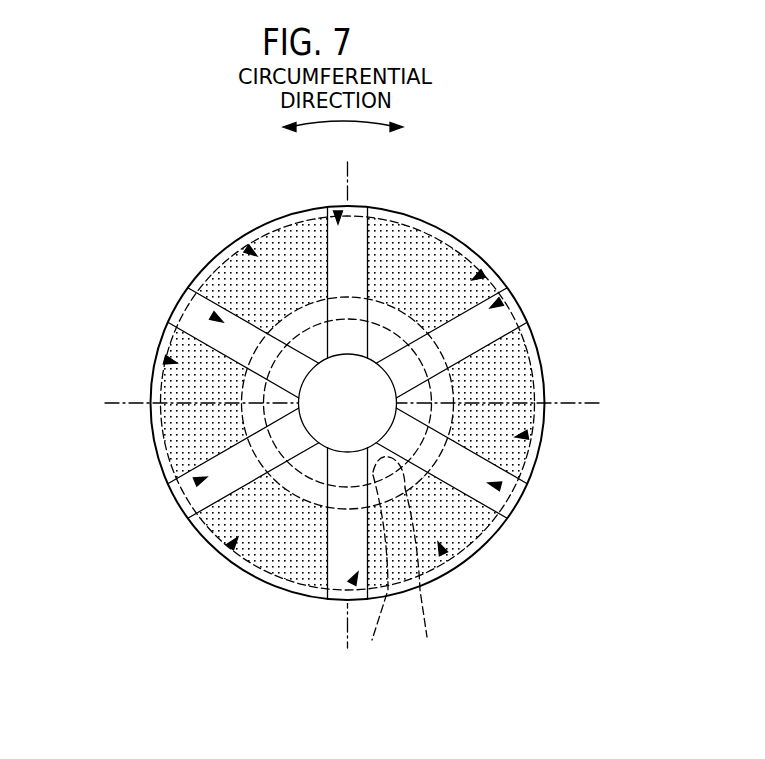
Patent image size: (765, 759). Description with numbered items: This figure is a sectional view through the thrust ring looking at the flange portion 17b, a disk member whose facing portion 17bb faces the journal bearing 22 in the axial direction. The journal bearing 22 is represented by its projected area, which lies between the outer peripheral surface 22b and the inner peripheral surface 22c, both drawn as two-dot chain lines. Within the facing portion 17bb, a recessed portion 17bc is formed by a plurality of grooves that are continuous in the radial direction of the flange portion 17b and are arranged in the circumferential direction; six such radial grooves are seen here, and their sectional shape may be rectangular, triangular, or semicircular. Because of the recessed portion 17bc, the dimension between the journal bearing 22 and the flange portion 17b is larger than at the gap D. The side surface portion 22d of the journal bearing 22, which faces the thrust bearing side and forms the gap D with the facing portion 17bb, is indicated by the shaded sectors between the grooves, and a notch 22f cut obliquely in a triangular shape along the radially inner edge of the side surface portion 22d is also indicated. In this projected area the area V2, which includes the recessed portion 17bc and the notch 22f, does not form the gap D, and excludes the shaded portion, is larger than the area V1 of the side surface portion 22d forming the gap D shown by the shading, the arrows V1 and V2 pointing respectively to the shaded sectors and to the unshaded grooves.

The flange portion 17b is at (266, 222).
The facing portion 17bb is at (183, 388).
The recessed portion 17bc is at (356, 270).
The journal bearing 22 is at (540, 385).
The outer peripheral surface 22b is at (445, 220).
The inner peripheral surface 22c is at (379, 566).
The side surface portion 22d is at (226, 244).
The notch 22f is at (426, 576).
The area of the side surface portion forming the gap D V1 is at (247, 250).
The area including the recessed portion V2 is at (338, 212).